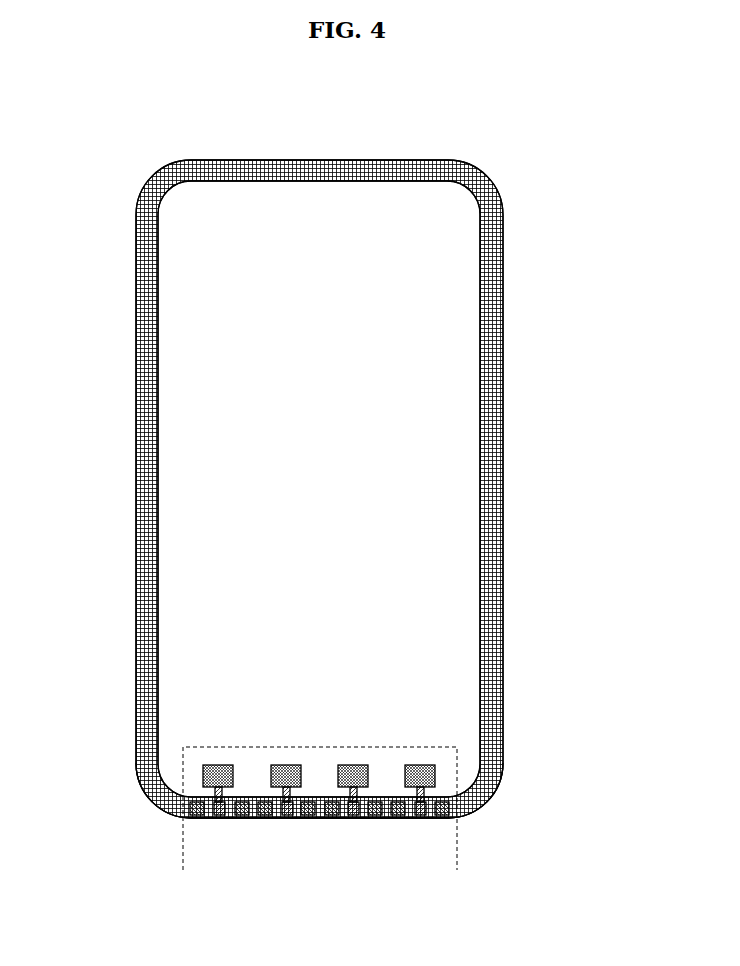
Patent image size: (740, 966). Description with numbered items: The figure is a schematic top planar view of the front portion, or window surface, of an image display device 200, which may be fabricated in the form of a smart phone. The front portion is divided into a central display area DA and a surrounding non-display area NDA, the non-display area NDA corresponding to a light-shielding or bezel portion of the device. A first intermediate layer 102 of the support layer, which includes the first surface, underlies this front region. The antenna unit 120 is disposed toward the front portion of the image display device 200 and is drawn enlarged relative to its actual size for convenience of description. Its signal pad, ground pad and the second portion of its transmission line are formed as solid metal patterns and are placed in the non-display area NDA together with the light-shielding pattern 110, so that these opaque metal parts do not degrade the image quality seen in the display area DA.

The image display device 200 is at (84, 75).
The non-display area NDA is at (500, 440).
The display area DA is at (480, 514).
The first intermediate layer 102 is at (466, 661).
The light-shielding pattern 110 is at (493, 792).
The antenna unit 120 is at (445, 757).